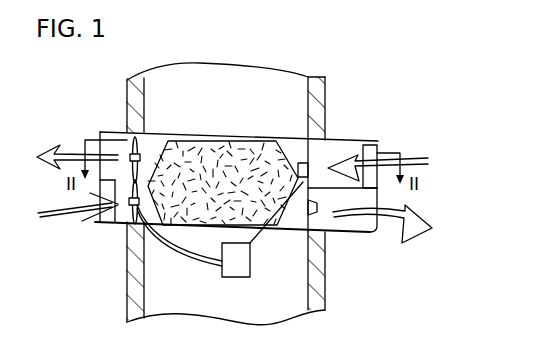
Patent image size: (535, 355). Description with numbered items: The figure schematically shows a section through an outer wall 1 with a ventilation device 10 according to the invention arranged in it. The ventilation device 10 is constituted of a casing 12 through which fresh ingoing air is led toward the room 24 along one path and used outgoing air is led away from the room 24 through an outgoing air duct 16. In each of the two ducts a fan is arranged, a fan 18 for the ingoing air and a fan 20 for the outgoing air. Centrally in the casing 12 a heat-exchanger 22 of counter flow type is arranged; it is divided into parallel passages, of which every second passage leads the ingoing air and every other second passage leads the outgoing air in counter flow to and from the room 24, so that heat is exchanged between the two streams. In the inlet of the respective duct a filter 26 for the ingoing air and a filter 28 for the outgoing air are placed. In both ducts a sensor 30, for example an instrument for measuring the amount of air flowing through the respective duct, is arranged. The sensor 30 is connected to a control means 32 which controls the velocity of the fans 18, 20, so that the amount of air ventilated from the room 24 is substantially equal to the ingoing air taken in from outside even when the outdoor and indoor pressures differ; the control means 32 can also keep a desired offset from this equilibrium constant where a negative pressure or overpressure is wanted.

The wall 1 is at (353, 148).
The ventilation device 10 is at (108, 128).
The casing 12 is at (280, 138).
The outgoing air duct 16 is at (357, 220).
The fan 18 is at (135, 154).
The fan 20 is at (153, 231).
The heat-exchanger 22 is at (222, 150).
The room 24 is at (71, 171).
The filter 26 is at (376, 147).
The filter 28 is at (107, 226).
The sensor 30 is at (316, 150).
The control means 32 is at (242, 260).